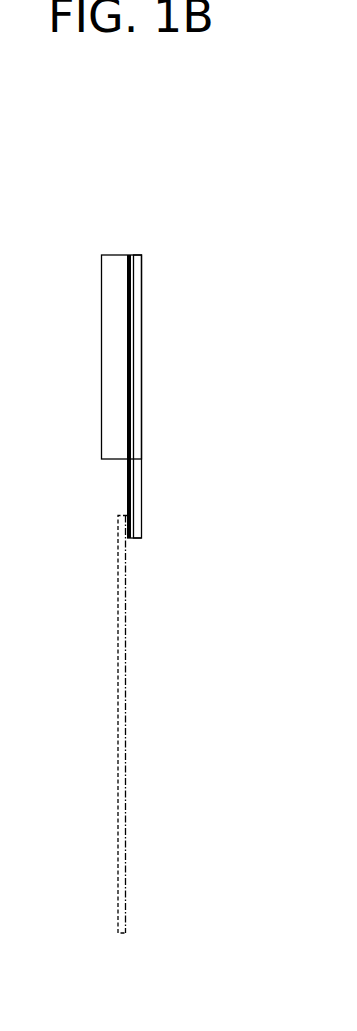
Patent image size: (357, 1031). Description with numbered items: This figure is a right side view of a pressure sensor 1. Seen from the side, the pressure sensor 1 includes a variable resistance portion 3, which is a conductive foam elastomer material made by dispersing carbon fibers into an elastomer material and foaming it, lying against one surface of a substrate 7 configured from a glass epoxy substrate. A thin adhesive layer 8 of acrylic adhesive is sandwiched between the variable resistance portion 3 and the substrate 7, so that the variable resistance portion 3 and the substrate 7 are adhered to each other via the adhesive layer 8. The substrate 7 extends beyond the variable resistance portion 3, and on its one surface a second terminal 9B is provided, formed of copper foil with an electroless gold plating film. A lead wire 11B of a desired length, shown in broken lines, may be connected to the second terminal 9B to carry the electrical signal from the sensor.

The pressure sensor 1 is at (147, 245).
The variable resistance portion 3 is at (108, 307).
The substrate 7 is at (136, 307).
The adhesive layer 8 is at (130, 255).
The second terminal 9B is at (126, 500).
The lead wire 11B is at (126, 623).